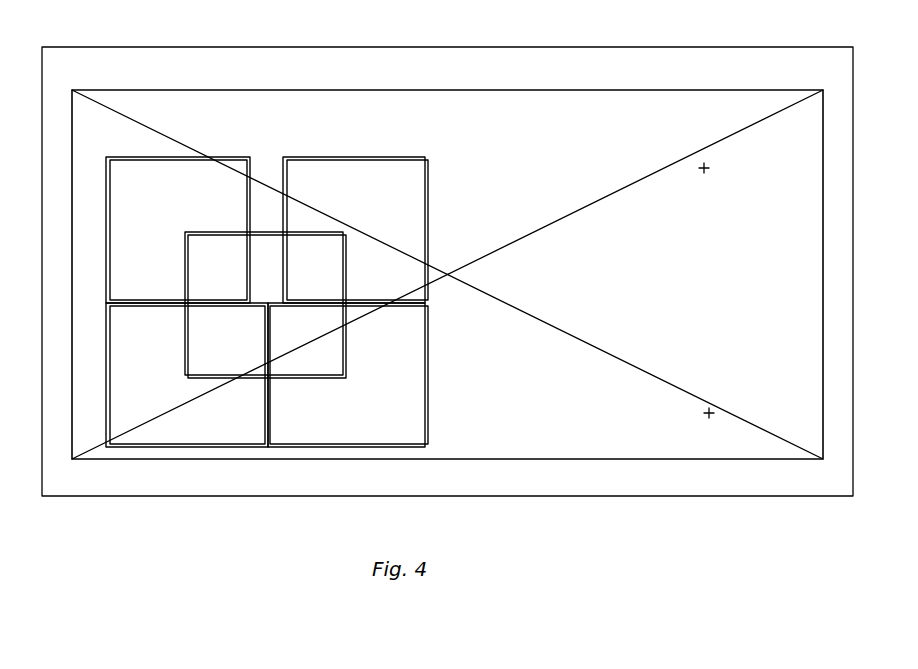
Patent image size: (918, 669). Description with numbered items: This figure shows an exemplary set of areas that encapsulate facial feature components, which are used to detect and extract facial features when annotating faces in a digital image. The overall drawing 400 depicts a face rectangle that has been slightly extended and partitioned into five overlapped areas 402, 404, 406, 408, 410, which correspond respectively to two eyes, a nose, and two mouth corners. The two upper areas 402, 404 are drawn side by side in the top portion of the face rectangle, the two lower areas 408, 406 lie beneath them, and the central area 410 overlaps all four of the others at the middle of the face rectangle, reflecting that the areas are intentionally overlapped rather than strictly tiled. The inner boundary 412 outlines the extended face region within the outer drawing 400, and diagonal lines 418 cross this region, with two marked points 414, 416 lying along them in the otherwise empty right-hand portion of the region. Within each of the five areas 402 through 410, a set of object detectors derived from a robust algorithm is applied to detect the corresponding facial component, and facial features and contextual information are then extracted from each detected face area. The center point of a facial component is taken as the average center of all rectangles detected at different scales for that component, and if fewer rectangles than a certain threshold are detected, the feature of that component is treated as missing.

The display screen 400 is at (445, 45).
The overlapped area 402 is at (178, 182).
The overlapped area 404 is at (347, 190).
The overlapped area 406 is at (320, 435).
The overlapped area 408 is at (170, 420).
The overlapped area 410 is at (243, 358).
The display area boundary 412 is at (495, 125).
The first calibration point 414 is at (705, 166).
The second calibration point 416 is at (710, 418).
The diagonal alignment lines 418 is at (528, 437).